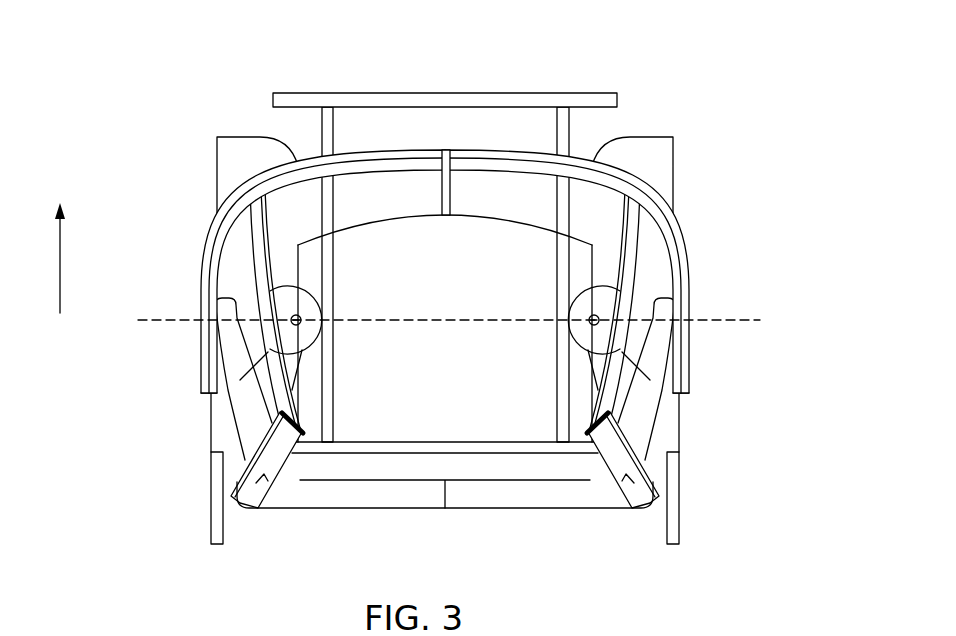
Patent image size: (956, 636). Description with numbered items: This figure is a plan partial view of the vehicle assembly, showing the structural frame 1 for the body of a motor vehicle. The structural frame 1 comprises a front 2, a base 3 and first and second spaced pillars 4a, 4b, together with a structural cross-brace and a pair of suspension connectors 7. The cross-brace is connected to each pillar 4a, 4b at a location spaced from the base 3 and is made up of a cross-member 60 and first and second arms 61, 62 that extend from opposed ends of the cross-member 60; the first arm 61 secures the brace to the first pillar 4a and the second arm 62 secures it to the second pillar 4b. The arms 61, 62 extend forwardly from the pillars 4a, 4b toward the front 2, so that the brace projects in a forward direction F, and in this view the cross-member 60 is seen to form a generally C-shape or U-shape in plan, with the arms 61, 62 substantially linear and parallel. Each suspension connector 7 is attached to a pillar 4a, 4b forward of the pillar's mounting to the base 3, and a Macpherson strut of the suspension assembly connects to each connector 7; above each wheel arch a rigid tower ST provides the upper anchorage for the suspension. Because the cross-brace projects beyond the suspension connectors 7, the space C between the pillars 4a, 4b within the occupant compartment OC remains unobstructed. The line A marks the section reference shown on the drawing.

The structural frame 1 is at (690, 47).
The front 2 is at (375, 93).
The base 3 is at (562, 146).
The first pillar 4a is at (672, 372).
The second pillar 4b is at (222, 376).
The suspension connector 7 is at (257, 398).
The cross-member 60 is at (472, 165).
The first arm 61 is at (237, 281).
The second arm 62 is at (676, 268).
The tower ST is at (268, 290).
The section line A- A is at (449, 306).
The forward direction F is at (46, 258).
The operator compartment OC is at (469, 284).
The space between the pillars C is at (462, 367).